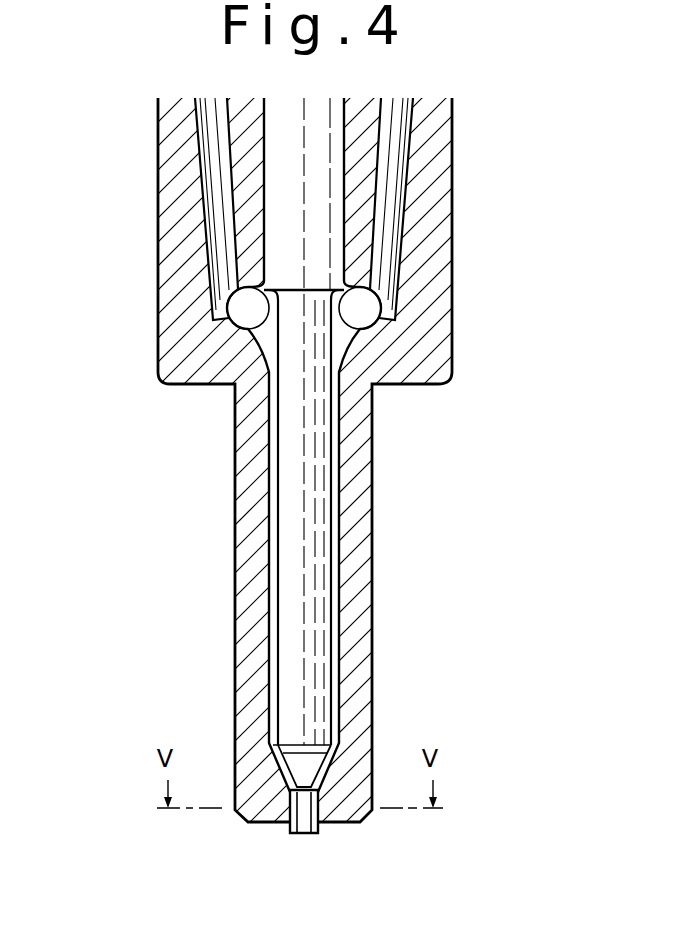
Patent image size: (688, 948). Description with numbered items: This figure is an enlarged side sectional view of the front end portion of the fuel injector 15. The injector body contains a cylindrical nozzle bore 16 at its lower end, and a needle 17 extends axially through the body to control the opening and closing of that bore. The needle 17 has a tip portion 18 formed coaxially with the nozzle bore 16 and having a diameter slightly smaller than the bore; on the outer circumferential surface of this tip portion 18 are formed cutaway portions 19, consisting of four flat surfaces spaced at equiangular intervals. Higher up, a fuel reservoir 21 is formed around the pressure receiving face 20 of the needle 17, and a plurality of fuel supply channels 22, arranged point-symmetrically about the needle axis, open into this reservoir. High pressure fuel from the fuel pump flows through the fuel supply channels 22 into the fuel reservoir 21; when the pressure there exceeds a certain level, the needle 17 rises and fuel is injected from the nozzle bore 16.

The fuel injector 15 is at (460, 264).
The nozzle bore 16 is at (292, 822).
The needle 17 is at (313, 565).
The tip portion 18 is at (303, 833).
The cutaway portions 19 is at (322, 810).
The pressure receiving face 20 is at (237, 338).
The fuel reservoir 21 is at (356, 331).
The fuel supply channels 22 is at (217, 190).